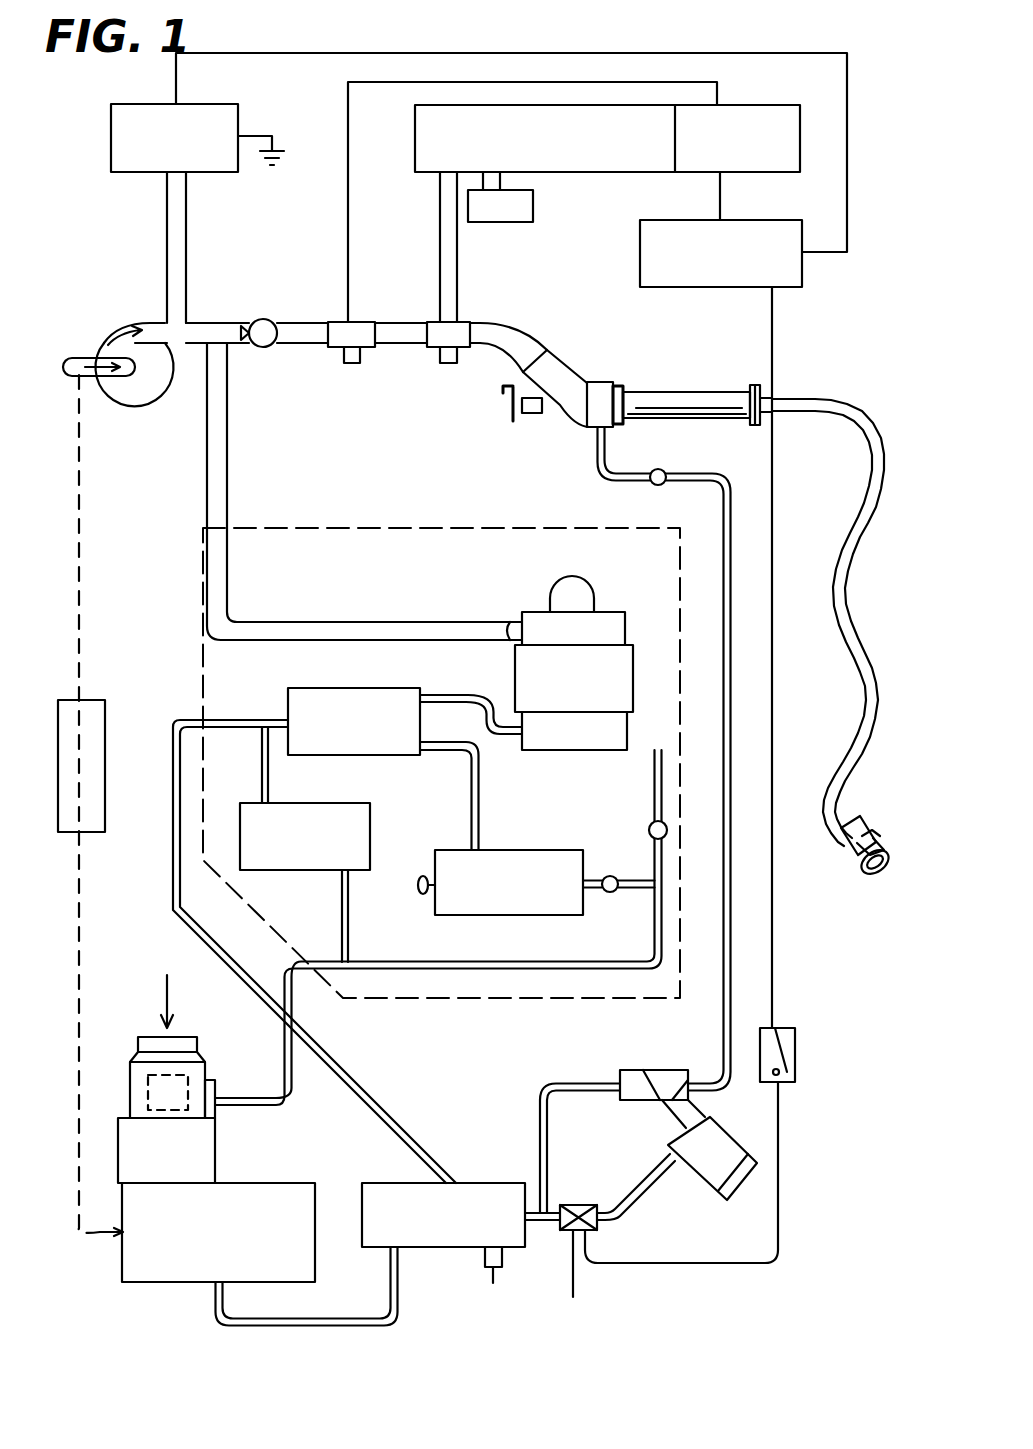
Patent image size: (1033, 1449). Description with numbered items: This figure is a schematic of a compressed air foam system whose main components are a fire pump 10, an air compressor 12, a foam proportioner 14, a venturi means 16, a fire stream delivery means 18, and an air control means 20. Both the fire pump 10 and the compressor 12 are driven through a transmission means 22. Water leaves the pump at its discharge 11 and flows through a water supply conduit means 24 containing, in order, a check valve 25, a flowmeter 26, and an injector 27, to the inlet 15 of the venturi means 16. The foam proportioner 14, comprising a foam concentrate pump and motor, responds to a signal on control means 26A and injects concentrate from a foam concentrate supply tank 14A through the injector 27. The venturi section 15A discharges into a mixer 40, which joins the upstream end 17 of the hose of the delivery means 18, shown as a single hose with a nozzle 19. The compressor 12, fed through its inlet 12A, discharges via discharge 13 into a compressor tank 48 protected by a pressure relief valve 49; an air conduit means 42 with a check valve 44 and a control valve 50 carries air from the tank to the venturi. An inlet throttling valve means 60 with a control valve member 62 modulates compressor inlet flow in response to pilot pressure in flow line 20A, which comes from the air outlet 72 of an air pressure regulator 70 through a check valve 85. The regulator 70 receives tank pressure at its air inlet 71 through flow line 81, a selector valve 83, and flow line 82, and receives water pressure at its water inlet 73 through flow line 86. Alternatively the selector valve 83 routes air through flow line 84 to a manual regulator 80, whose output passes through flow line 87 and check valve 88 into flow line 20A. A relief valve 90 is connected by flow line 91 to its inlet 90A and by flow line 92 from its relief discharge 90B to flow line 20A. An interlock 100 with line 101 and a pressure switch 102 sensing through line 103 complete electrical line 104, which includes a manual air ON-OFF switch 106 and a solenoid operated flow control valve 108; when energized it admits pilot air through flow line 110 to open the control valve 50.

The fire pump 10 is at (112, 335).
The discharge 11 is at (150, 320).
The air compressor 12 is at (152, 1283).
The inlet 12A is at (202, 1152).
The discharge 13 is at (222, 1302).
The foam proportioner 14 is at (415, 128).
The foam concentrate supply tank 14A is at (533, 206).
The inlet 15 is at (545, 350).
The venturi section 15A is at (598, 418).
The venturi means 16 is at (570, 368).
The upstream end 17 is at (763, 427).
The fire stream delivery means 18 is at (852, 522).
The nozzle 19 is at (855, 826).
The air control means 20 is at (398, 525).
The flow line 20A is at (282, 1112).
The transmission means 22 is at (128, 680).
The water supply conduit means 24 is at (305, 320).
The check valve 25 is at (268, 348).
The flowmeter 26 is at (350, 364).
The control means 26A is at (383, 228).
The injector 27 is at (440, 333).
The mixer 40 is at (670, 392).
The air conduit means 42 is at (725, 517).
The check valve 44 is at (685, 442).
The compressor tank 48 is at (507, 1147).
The pressure relief valve 49 is at (487, 1252).
The control valve 50 is at (700, 1037).
The inlet throttling valve means 60 is at (198, 1072).
The control valve member 62 is at (173, 1058).
The air pressure regulator 70 is at (597, 592).
The air inlet 71 is at (518, 710).
The air outlet 72 is at (640, 753).
The water inlet 73 is at (510, 622).
The manual regulator 80 is at (553, 818).
The flow line 81 is at (253, 678).
The flow line 82 is at (470, 665).
The selector valve 83 is at (393, 687).
The flow line 84 is at (465, 730).
The check valve 85 is at (650, 828).
The flow line 86 is at (348, 588).
The flow line 87 is at (610, 876).
The check valve 88 is at (610, 890).
The relief valve 90 is at (370, 822).
The inlet 90A is at (267, 802).
The relief discharge 90B is at (345, 872).
The flow line 91 is at (262, 787).
The flow line 92 is at (348, 943).
The interlock 100 is at (640, 255).
The line 101 is at (722, 190).
The pressure switch 102 is at (143, 175).
The line 103 is at (185, 238).
The electrical line 104 is at (572, 55).
The manual air ON-OFF switch 106 is at (793, 1025).
The solenoid operated flow control valve 108 is at (597, 1230).
The flow line 110 is at (642, 1177).